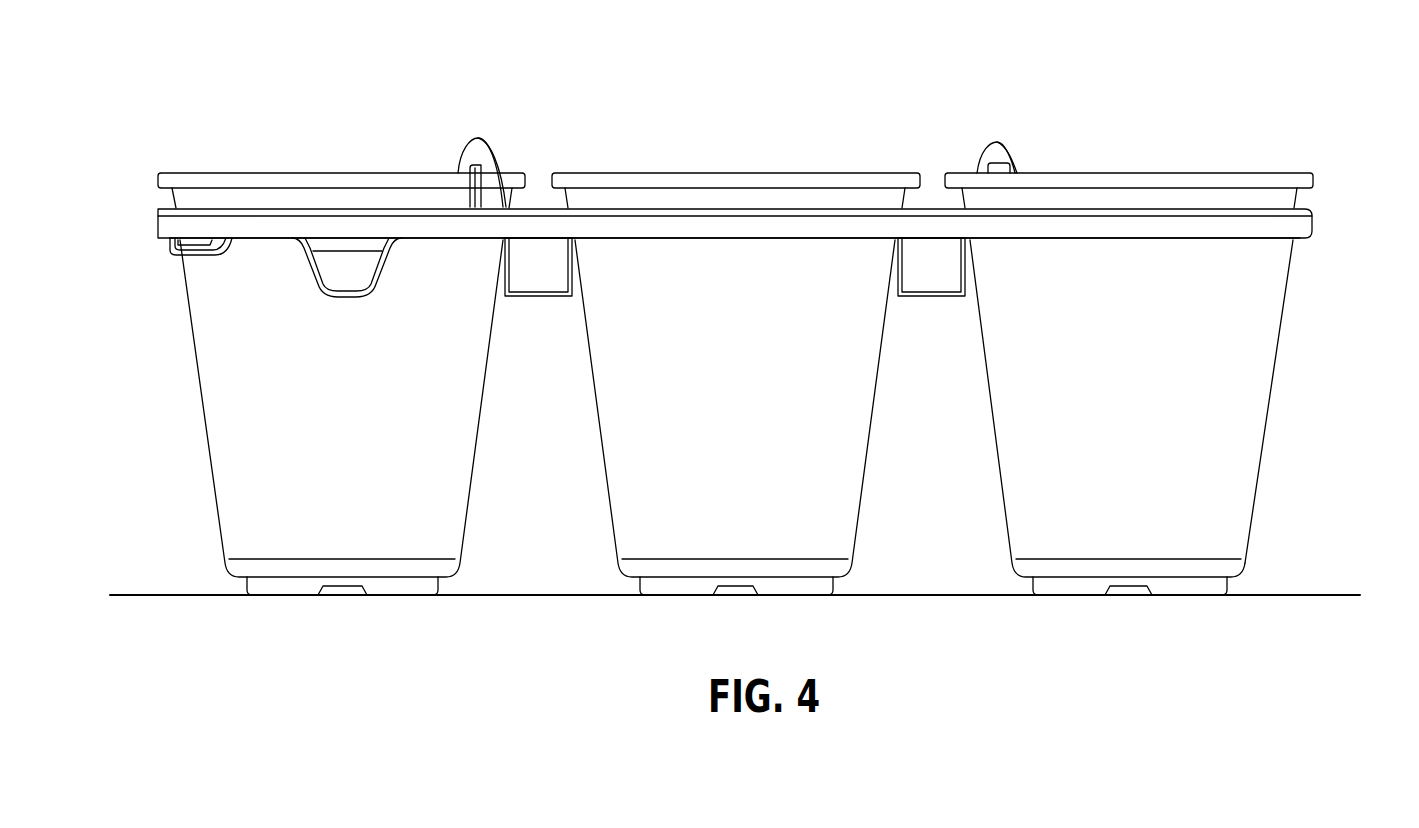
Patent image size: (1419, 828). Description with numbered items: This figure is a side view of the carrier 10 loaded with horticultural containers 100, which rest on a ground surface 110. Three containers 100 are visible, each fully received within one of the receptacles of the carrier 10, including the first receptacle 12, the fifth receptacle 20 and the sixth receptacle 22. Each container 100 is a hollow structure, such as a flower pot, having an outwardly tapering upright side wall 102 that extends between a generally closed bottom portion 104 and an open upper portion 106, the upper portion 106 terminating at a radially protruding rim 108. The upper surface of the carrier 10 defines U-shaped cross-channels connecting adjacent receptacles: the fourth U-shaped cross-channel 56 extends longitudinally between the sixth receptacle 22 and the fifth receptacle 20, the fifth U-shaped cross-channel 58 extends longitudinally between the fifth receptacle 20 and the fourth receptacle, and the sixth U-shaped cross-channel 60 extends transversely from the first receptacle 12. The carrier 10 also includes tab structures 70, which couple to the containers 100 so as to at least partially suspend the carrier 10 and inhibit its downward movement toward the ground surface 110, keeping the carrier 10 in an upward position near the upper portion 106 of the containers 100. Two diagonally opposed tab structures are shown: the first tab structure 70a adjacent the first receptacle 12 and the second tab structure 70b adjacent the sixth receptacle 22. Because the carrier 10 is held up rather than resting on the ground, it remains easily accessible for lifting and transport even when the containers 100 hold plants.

The carrier 10 is at (158, 211).
The first receptacle 12 is at (265, 227).
The fifth receptacle 20 is at (722, 227).
The sixth receptacle 22 is at (1153, 165).
The fourth U-shaped cross-channel 56 is at (943, 283).
The fifth U-shaped cross-channel 58 is at (550, 283).
The sixth U-shaped cross-channel 60 is at (356, 286).
The tab structure 70 is at (737, 119).
The first tab structure 70a is at (477, 138).
The second tab structure 70b is at (992, 138).
The horticultural container 100 is at (463, 527).
The side wall 102 is at (1237, 388).
The bottom portion 104 is at (1245, 576).
The upper portion 106 is at (1285, 224).
The rim 108 is at (1283, 173).
The ground surface 110 is at (1288, 595).